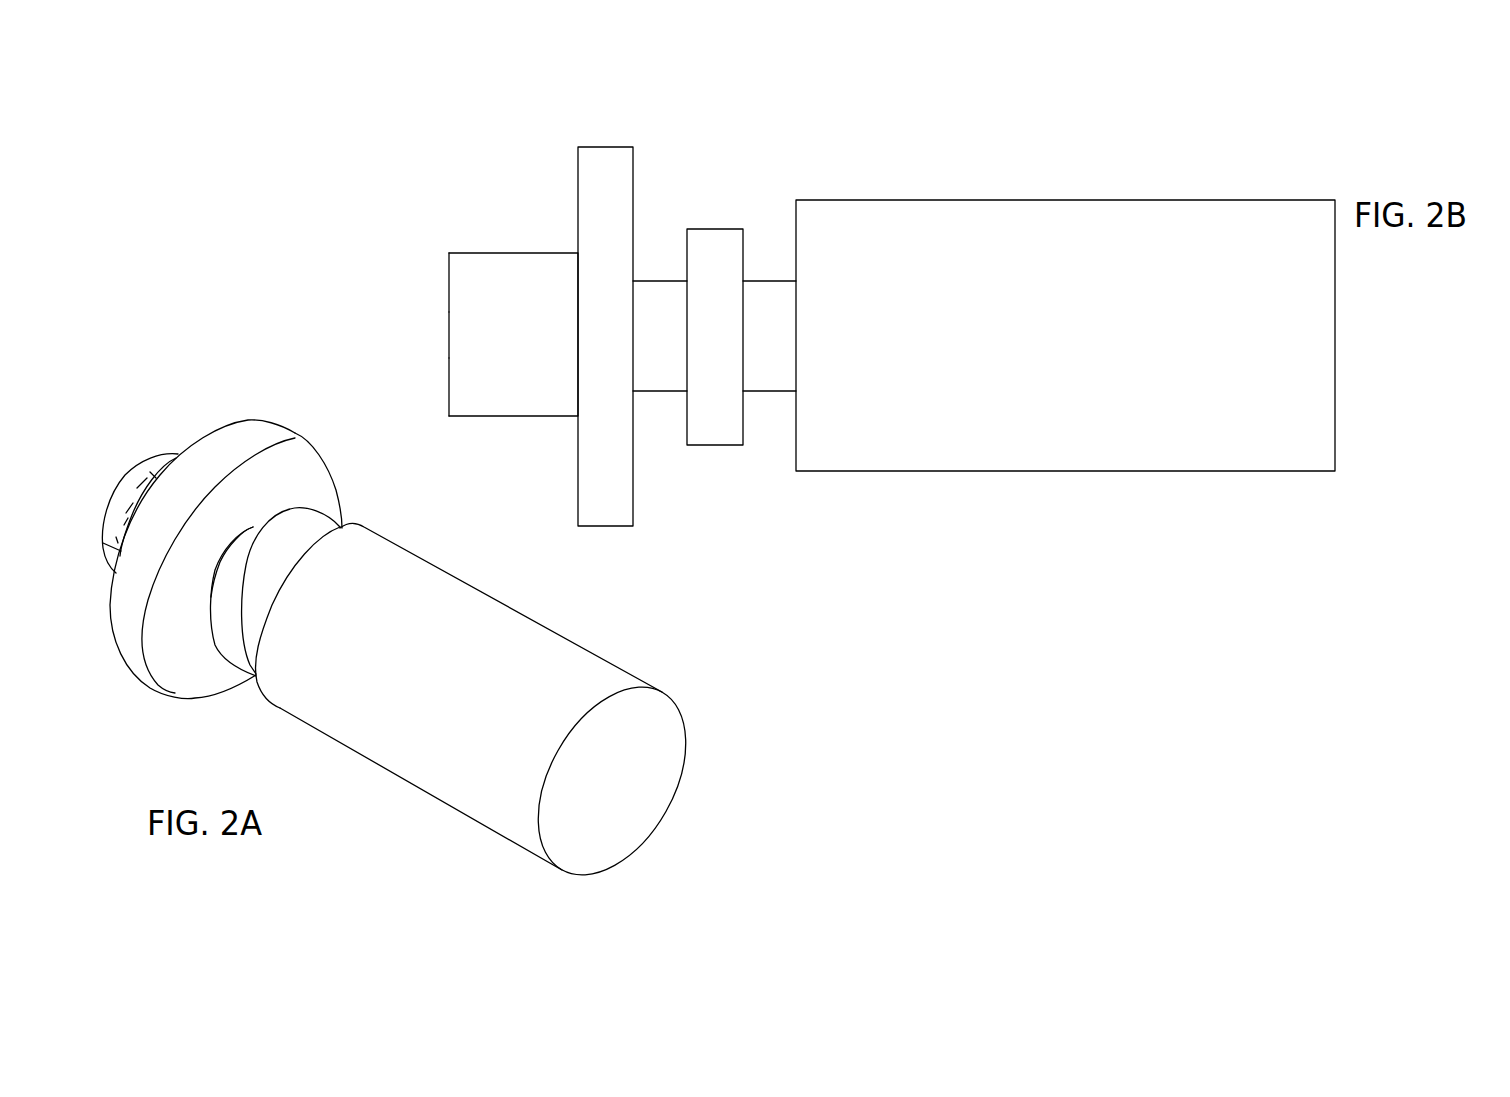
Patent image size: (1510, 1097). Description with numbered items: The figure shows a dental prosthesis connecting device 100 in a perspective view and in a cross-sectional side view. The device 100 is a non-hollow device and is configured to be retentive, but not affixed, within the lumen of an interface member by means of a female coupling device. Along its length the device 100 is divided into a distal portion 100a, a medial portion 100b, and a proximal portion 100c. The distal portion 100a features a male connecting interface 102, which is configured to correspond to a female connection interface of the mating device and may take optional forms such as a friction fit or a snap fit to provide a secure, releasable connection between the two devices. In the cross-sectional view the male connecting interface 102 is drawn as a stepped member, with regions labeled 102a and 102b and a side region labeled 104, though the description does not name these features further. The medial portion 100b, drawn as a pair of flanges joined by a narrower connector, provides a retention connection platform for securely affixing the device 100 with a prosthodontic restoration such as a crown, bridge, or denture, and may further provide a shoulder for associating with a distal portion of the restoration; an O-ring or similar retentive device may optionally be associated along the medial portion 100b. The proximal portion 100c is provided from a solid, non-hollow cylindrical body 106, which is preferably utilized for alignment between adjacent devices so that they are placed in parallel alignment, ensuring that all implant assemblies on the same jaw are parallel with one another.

In FIG. 2B, the prosthesis connecting device 100 is at (829, 299).
In FIG. 2A, the prosthesis connecting device 100 is at (690, 651).
In FIG. 2B, the distal portion 100a is at (563, 147).
In FIG. 2B, the medial portion 100b is at (798, 120).
In FIG. 2B, the proximal portion 100c is at (1354, 160).
In FIG. 2B, the male connecting interface 102 is at (422, 220).
In FIG. 2B, the first end of tip member 102a is at (450, 290).
In FIG. 2B, the second end of tip member 102b is at (448, 370).
In FIG. 2B, the side surface of tip member 104 is at (440, 337).
In FIG. 2B, the cylindrical body 106 is at (1023, 436).